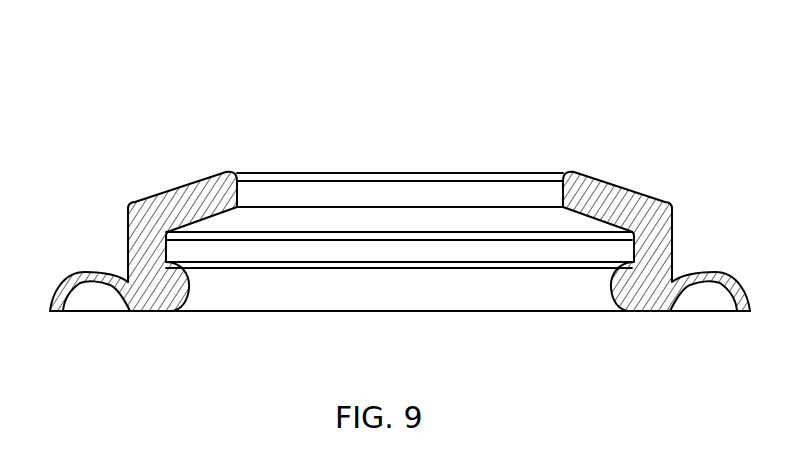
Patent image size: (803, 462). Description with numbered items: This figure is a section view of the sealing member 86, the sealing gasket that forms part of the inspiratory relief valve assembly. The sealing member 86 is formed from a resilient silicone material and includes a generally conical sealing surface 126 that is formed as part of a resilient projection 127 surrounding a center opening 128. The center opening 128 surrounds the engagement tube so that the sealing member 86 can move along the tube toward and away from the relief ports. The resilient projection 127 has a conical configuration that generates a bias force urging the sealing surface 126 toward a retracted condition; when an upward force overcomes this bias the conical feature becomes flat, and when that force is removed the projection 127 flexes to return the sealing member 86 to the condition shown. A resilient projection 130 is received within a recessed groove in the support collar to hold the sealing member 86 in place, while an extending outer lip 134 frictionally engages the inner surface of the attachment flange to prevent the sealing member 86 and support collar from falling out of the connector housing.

The sealing member 86 is at (253, 63).
The conical sealing surface 126 is at (181, 187).
The resilient projection 127 is at (640, 198).
The center opening 128 is at (342, 182).
The resilient projection 130 is at (192, 312).
The extending outer lip 134 is at (78, 268).